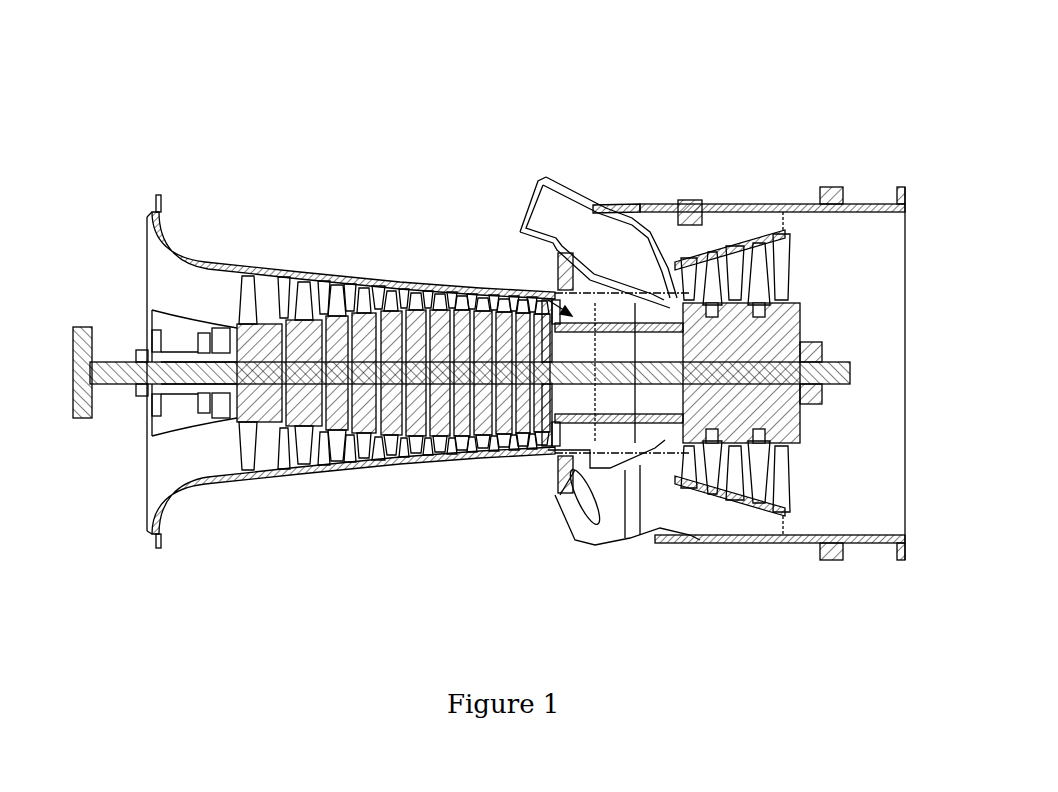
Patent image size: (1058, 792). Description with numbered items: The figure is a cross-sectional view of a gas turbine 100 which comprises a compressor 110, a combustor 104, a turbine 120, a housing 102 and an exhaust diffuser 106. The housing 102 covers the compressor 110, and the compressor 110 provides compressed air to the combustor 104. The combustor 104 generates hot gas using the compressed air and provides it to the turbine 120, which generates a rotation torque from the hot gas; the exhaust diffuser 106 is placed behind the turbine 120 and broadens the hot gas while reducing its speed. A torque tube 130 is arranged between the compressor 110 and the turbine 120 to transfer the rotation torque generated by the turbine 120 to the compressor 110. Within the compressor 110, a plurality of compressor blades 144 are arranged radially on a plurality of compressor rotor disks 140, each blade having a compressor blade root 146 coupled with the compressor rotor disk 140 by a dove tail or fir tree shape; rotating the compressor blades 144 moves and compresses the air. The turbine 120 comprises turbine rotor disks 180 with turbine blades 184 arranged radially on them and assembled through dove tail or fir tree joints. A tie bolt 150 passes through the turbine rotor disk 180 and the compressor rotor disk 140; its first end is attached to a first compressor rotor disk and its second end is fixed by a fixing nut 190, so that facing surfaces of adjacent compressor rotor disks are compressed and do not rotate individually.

The gas turbine 100 is at (864, 38).
The housing 102 is at (307, 379).
The combustor 104 is at (611, 312).
The exhaust diffuser 106 is at (800, 340).
The compressor 110 is at (552, 460).
The turbine 120 is at (797, 525).
The torque tube 130 is at (546, 299).
The compressor rotor disk 140 is at (280, 282).
The compressor blade 144 is at (300, 284).
The compressor blade root 146 is at (322, 283).
The tie bolt 150 is at (165, 405).
The turbine rotor disk 180 is at (753, 303).
The turbine blade 184 is at (770, 225).
The fixing nut 190 is at (815, 352).